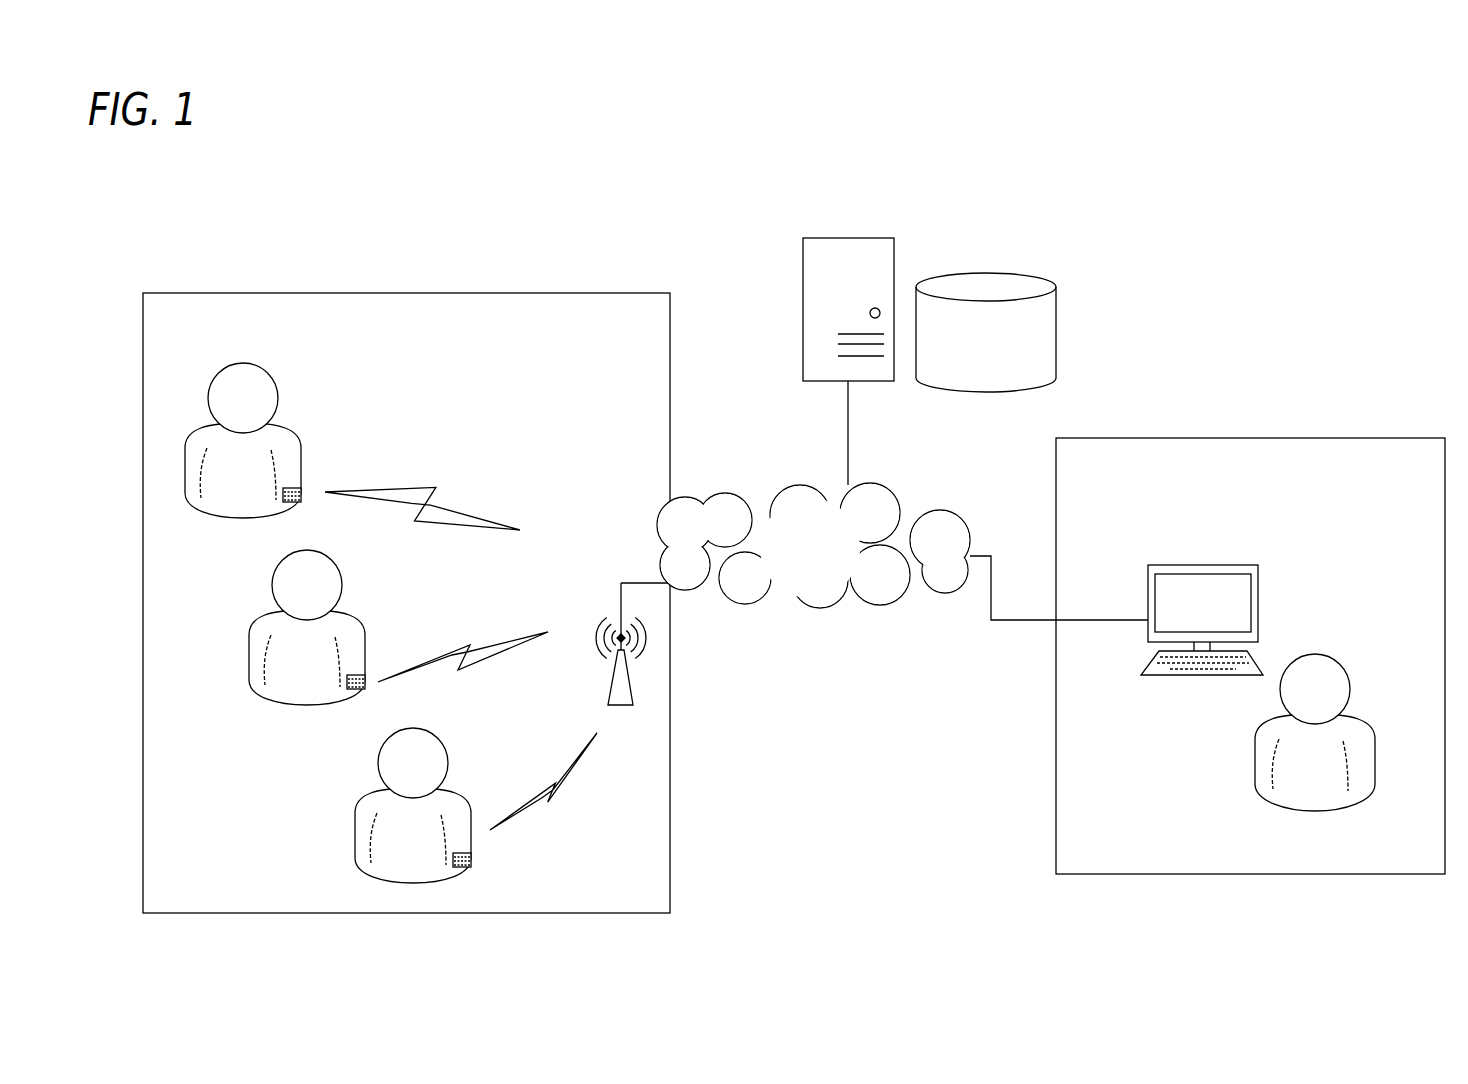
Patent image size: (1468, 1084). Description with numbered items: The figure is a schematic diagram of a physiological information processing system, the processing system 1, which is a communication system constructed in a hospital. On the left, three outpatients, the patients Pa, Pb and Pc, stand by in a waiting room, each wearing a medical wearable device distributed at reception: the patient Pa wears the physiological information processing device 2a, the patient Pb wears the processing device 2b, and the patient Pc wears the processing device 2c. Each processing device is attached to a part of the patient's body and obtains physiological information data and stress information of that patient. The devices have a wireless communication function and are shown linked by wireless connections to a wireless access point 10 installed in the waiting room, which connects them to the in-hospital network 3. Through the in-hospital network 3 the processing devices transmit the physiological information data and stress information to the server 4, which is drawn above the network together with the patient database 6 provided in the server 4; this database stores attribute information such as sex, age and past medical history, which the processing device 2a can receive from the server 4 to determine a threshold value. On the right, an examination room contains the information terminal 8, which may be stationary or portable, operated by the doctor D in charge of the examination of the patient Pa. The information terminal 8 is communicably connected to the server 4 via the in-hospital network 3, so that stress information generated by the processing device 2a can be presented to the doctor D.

The processing system 1 is at (300, 233).
The physiological information processing device 2a is at (495, 866).
The physiological information processing device 2b is at (375, 651).
The physiological information processing device 2c is at (312, 465).
The in-hospital network 3 is at (899, 484).
The server 4 is at (850, 238).
The patient database 6 is at (988, 267).
The information terminal 8 is at (1223, 565).
The wireless access point 10 is at (629, 706).
The patient Pa is at (435, 805).
The patient Pb is at (329, 627).
The patient Pc is at (265, 440).
The doctor D is at (1315, 710).